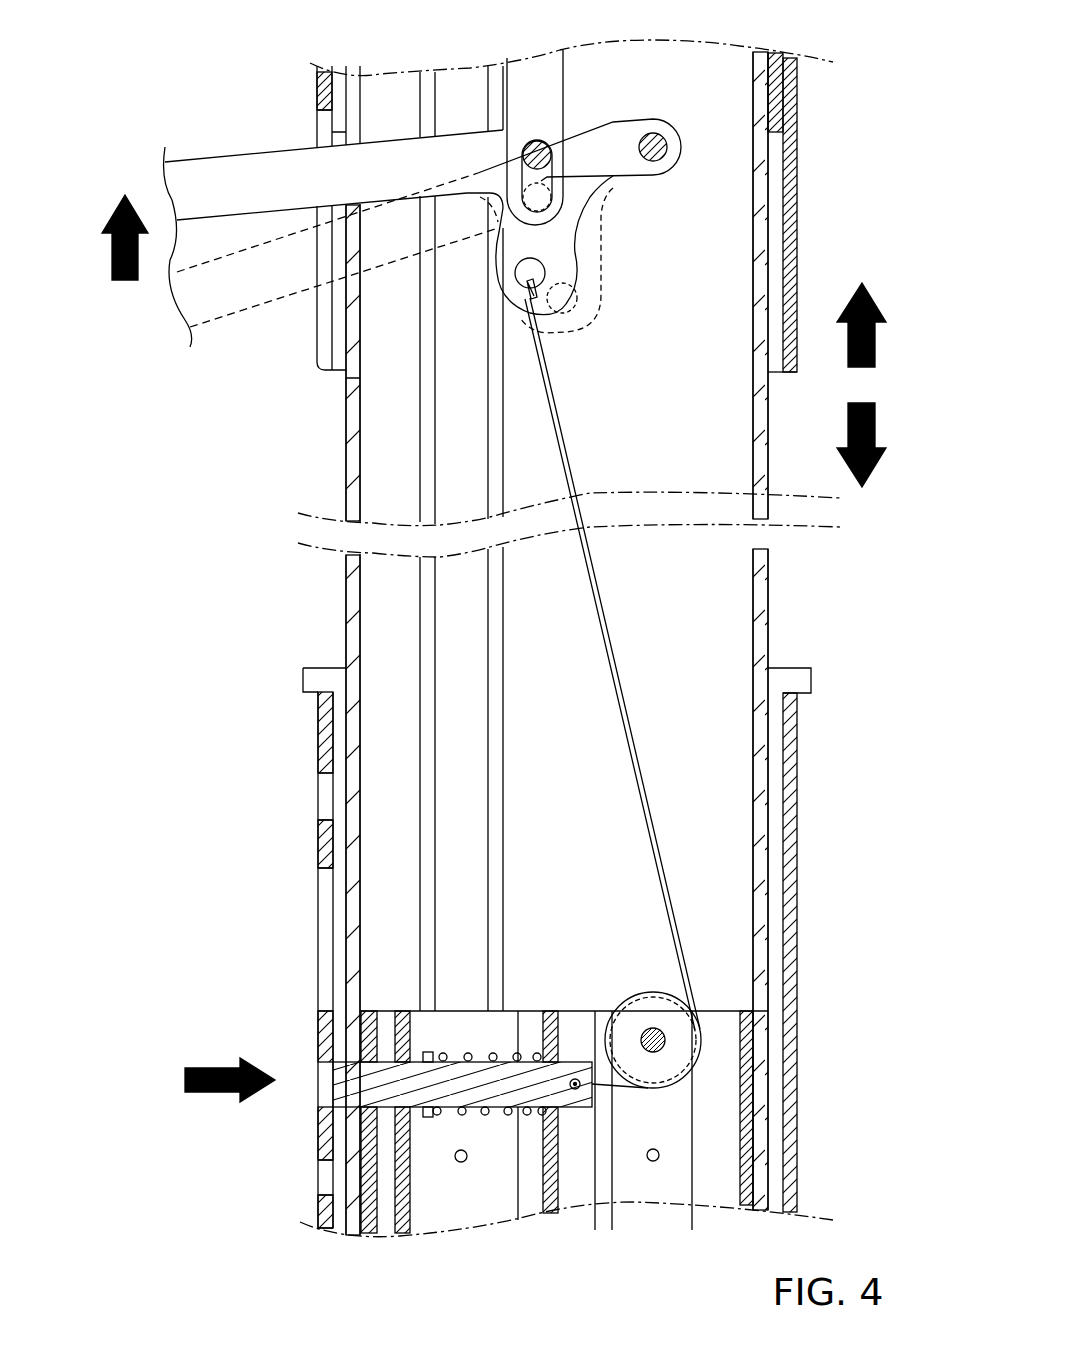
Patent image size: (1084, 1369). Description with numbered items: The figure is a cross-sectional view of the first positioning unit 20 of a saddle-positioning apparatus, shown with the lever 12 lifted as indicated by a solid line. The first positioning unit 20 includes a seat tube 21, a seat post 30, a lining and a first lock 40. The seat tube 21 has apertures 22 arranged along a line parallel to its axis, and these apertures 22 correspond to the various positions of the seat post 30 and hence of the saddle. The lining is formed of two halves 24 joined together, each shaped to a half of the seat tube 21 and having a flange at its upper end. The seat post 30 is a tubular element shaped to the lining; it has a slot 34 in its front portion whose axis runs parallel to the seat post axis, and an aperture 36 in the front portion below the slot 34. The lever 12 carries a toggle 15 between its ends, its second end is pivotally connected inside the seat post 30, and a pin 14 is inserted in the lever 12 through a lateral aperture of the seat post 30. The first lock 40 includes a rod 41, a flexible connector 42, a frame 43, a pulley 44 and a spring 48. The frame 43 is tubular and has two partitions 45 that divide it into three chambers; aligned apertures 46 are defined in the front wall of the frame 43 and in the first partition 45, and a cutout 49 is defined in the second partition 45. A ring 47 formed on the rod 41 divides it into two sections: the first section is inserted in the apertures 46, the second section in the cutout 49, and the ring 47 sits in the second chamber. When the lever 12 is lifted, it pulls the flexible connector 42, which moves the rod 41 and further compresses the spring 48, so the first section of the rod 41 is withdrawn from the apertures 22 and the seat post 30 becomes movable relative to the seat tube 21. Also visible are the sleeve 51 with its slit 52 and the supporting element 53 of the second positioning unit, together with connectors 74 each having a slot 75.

The lever 12 is at (224, 177).
The pin 14 is at (540, 145).
The toggle 15 is at (505, 278).
The first positioning unit 20 is at (185, 650).
The seat tube 21 is at (327, 747).
The apertures 22 is at (327, 888).
The halves of the lining 24 is at (775, 788).
The seat post 30 is at (350, 592).
The slot 34 is at (355, 336).
The aperture 36 is at (393, 1068).
The first lock 40 is at (740, 997).
The rod 41 is at (350, 1090).
The flexible connector 42 is at (645, 780).
The frame 43 is at (745, 1148).
The pulley 44 is at (682, 1047).
The partitions 45 is at (548, 1213).
The apertures 46 is at (345, 1068).
The ring 47 is at (428, 1117).
The spring 48 is at (487, 1117).
The cutout 49 is at (563, 1108).
The sleeve 51 is at (788, 213).
The slit 52 is at (325, 318).
The supporting element 53 is at (775, 90).
The connectors 74 is at (525, 80).
The slot 75 is at (682, 170).